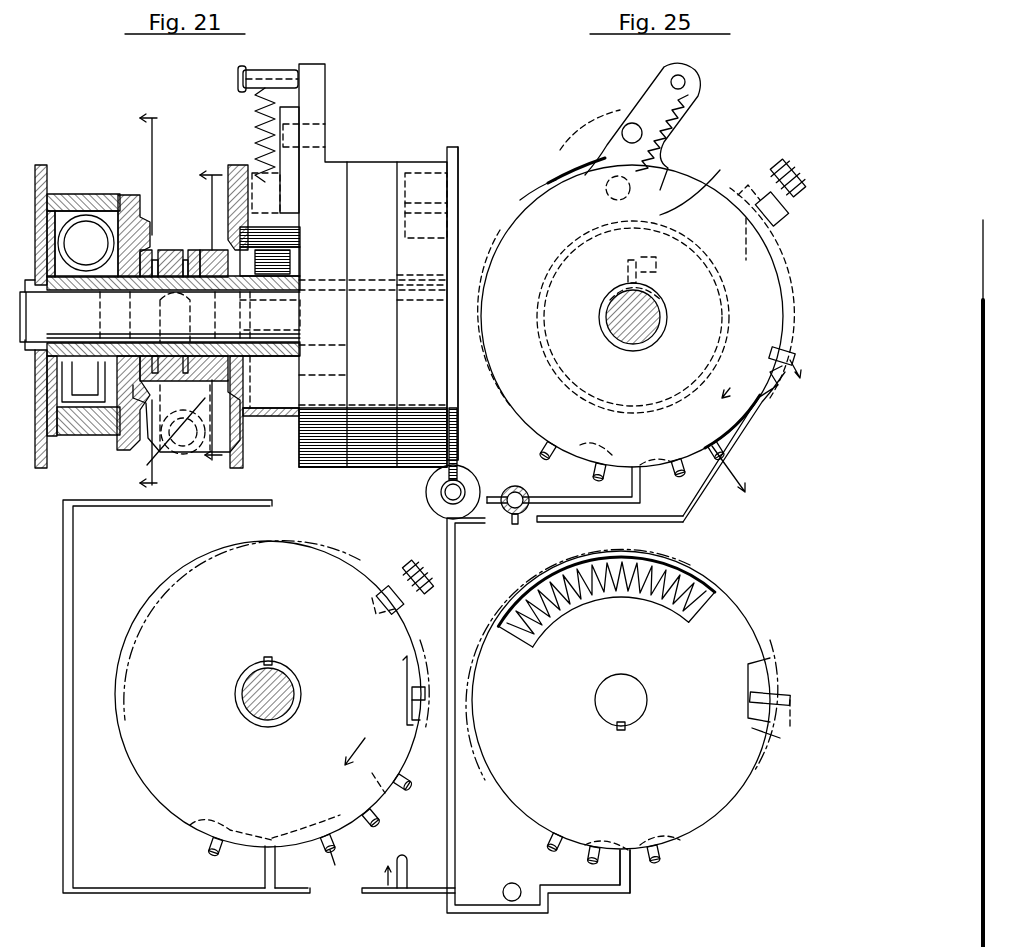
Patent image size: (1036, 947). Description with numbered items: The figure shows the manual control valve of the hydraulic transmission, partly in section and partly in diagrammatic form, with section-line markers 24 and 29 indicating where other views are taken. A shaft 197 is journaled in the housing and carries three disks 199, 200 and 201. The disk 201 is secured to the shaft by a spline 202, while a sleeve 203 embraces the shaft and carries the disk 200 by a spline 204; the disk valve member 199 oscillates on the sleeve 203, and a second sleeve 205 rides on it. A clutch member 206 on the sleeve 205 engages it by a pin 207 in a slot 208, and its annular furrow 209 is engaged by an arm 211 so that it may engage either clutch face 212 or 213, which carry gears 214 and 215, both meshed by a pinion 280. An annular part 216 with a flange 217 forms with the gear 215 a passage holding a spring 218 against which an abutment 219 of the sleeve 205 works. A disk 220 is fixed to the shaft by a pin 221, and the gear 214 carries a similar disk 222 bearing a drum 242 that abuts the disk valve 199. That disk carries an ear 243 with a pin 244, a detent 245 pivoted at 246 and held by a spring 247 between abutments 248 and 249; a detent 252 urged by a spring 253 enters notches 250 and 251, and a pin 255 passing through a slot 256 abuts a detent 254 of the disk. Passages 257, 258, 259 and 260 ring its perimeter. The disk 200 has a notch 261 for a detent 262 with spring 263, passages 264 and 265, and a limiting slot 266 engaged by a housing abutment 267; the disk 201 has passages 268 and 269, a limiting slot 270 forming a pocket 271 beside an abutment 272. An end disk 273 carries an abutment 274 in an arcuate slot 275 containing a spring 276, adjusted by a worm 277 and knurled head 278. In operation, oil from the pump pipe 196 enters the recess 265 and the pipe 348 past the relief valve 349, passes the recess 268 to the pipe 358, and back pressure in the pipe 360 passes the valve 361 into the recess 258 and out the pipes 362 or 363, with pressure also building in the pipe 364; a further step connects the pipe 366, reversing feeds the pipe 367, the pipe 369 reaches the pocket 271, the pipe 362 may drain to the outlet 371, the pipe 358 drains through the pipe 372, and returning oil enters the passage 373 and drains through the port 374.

In FIG. 21, the section line 24 is at (152, 296).
In FIG. 21, the section line 29 is at (216, 310).
In FIG. 25, the pipe 196 is at (338, 862).
In FIG. 21, the shaft 197 is at (160, 317).
In FIG. 25, the shaft 197 is at (650, 320).
In FIG. 21, the disk valve member 199 is at (343, 160).
In FIG. 25, the disk valve member 199 is at (715, 175).
In FIG. 21, the disk 200 is at (375, 172).
In FIG. 25, the disk 200 is at (308, 570).
In FIG. 21, the valve disk 201 is at (415, 162).
In FIG. 25, the valve disk 201 is at (750, 787).
In FIG. 25, the spline 202 is at (621, 730).
In FIG. 21, the sleeve 203 is at (271, 382).
In FIG. 25, the sleeve 203 is at (668, 302).
In FIG. 25, the spline 204 is at (272, 658).
In FIG. 21, the second sleeve 205 is at (128, 282).
In FIG. 21, the clutch member 206 is at (166, 250).
In FIG. 21, the pin 207 is at (186, 250).
In FIG. 21, the slot 208 is at (190, 250).
In FIG. 21, the annular furrow 209 is at (180, 424).
In FIG. 21, the arm 211 is at (185, 432).
In FIG. 21, the clutch face 212 is at (240, 175).
In FIG. 21, the clutch face 213 is at (146, 250).
In FIG. 21, the gear 214 is at (246, 460).
In FIG. 21, the gear 215 is at (138, 230).
In FIG. 21, the annular part 216 is at (52, 212).
In FIG. 21, the flange 217 is at (72, 195).
In FIG. 21, the spring 218 is at (52, 440).
In FIG. 21, the abutment 219 is at (88, 410).
In FIG. 21, the disk 220 is at (40, 165).
In FIG. 21, the pin 221 is at (86, 244).
In FIG. 21, the disk 222 is at (258, 125).
In FIG. 21, the drum 242 is at (255, 416).
In FIG. 25, the drum 242 is at (580, 395).
In FIG. 21, the ear 243 is at (318, 97).
In FIG. 25, the ear 243 is at (680, 118).
In FIG. 21, the pin 244 is at (262, 74).
In FIG. 25, the pin 244 is at (686, 80).
In FIG. 21, the detent 245 is at (290, 168).
In FIG. 25, the detent 245 is at (608, 145).
In FIG. 21, the pivot 246 is at (325, 124).
In FIG. 25, the pivot 246 is at (628, 125).
In FIG. 21, the spring 247 is at (255, 88).
In FIG. 25, the spring 247 is at (700, 104).
In FIG. 25, the abutment 248 is at (660, 195).
In FIG. 25, the abutment 249 is at (550, 178).
In FIG. 25, the notch 250 is at (752, 179).
In FIG. 25, the notch 251 is at (748, 244).
In FIG. 25, the detent 252 is at (775, 225).
In FIG. 25, the spring 253 is at (786, 160).
In FIG. 21, the bushing 254 is at (285, 245).
In FIG. 25, the bushing 254 is at (657, 265).
In FIG. 21, the pin 255 is at (290, 272).
In FIG. 25, the pin 255 is at (626, 268).
In FIG. 21, the slot 256 is at (295, 290).
In FIG. 25, the slot 256 is at (612, 305).
In FIG. 25, the passage 257 is at (590, 455).
In FIG. 25, the passage 258 is at (652, 462).
In FIG. 25, the passage 259 is at (734, 444).
In FIG. 25, the passage 260 is at (776, 353).
In FIG. 25, the notch 261 is at (400, 605).
In FIG. 25, the detent 262 is at (382, 590).
In FIG. 25, the spring 263 is at (412, 562).
In FIG. 25, the passage 264 is at (222, 828).
In FIG. 25, the passage 265 is at (308, 832).
In FIG. 25, the limiting slot 266 is at (410, 712).
In FIG. 25, the limiting abutment 267 is at (407, 690).
In FIG. 25, the passage 268 is at (606, 840).
In FIG. 25, the passage 269 is at (662, 840).
In FIG. 25, the limiting slot 270 is at (750, 690).
In FIG. 25, the pocket 271 is at (758, 712).
In FIG. 25, the abutment 272 is at (750, 700).
In FIG. 21, the disk 273 is at (455, 238).
In FIG. 25, the disk 273 is at (498, 206).
In FIG. 21, the abutment 274 is at (452, 160).
In FIG. 25, the abutment 274 is at (700, 600).
In FIG. 25, the arcuate slot 275 is at (655, 600).
In FIG. 25, the spring 276 is at (588, 604).
In FIG. 25, the worm 277 is at (475, 490).
In FIG. 25, the knurled head 278 is at (465, 470).
In FIG. 21, the pinion 280 is at (270, 317).
In FIG. 25, the pipe 348 is at (265, 864).
In FIG. 25, the relief valve 349 is at (508, 883).
In FIG. 25, the pipe 358 is at (583, 864).
In FIG. 25, the pipe 360 is at (70, 597).
In FIG. 25, the valve 361 is at (515, 529).
In FIG. 25, the pipe 362 is at (671, 481).
In FIG. 25, the pipe 363 is at (600, 479).
In FIG. 25, the pipe 364 is at (402, 862).
In FIG. 25, the pipe 366 is at (660, 860).
In FIG. 25, the pipe 367 is at (389, 800).
In FIG. 25, the pipe 369 is at (790, 730).
In FIG. 25, the outlet 371 is at (736, 470).
In FIG. 25, the pipe 372 is at (553, 852).
In FIG. 25, the passage 373 is at (367, 752).
In FIG. 25, the port 374 is at (410, 775).